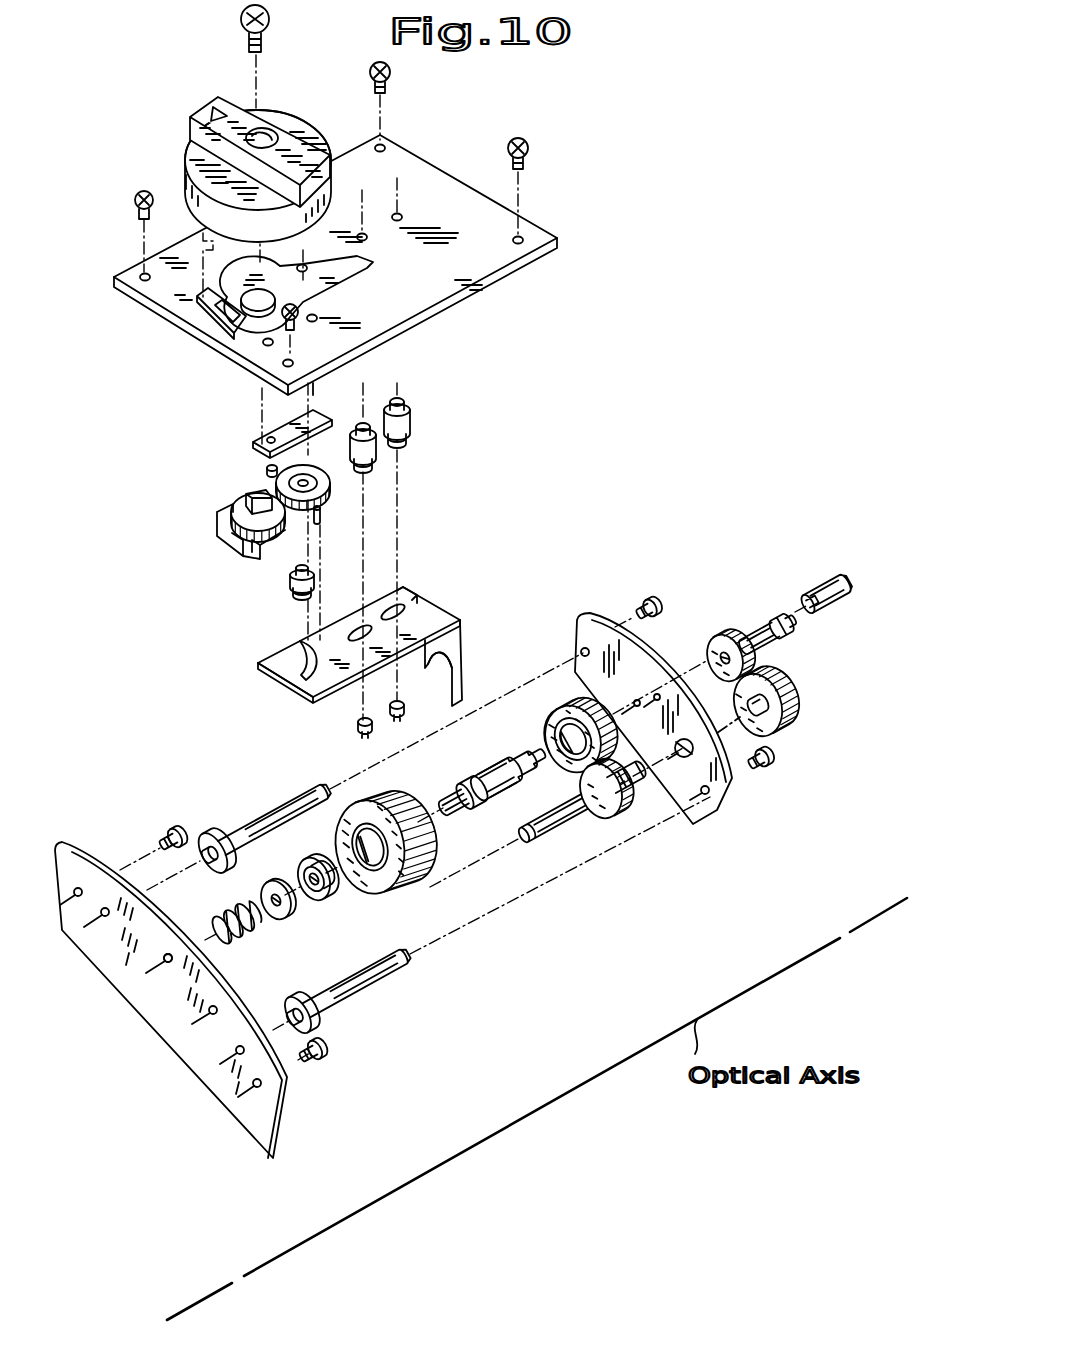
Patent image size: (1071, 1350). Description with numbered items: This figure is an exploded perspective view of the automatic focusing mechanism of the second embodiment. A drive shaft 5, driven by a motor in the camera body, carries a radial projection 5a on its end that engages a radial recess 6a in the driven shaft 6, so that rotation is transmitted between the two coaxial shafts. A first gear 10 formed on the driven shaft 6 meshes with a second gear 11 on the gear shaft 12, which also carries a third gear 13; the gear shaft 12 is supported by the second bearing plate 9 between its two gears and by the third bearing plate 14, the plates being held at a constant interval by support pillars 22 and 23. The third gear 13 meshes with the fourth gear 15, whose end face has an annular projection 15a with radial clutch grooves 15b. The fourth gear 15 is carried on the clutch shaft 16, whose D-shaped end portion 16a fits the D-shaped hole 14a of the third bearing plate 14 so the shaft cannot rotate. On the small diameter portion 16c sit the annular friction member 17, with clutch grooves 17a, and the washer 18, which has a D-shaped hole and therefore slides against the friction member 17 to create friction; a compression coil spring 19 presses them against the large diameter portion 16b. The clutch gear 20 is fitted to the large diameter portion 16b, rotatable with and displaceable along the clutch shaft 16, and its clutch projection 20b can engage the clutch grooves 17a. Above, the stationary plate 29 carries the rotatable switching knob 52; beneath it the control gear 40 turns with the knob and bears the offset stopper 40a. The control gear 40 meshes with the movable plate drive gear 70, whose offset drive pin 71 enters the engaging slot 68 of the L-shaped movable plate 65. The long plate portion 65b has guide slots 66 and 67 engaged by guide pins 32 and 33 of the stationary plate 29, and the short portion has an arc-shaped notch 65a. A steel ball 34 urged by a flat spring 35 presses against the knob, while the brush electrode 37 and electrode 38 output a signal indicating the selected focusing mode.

The drive shaft 5 is at (838, 583).
The projection 5a is at (815, 598).
The driven shaft 6 is at (756, 632).
The recess 6a is at (790, 630).
The second bearing plate 9 is at (718, 807).
The first gear 10 is at (733, 650).
The second gear 11 is at (795, 707).
The gear shaft 12 is at (584, 812).
The third gear 13 is at (625, 812).
The third bearing plate 14 is at (285, 1130).
The hole 14a is at (165, 962).
The fourth gear 15 is at (558, 718).
The annular projection 15a is at (576, 760).
The clutch grooves 15b is at (575, 708).
The clutch shaft 16 is at (505, 765).
The end portion 16a is at (457, 807).
The large diameter portion 16b is at (502, 803).
The small diameter portion 16c is at (476, 785).
The friction member 17 is at (325, 862).
The clutch grooves 17a is at (333, 886).
The washer 18 is at (282, 912).
The compression coil spring 19 is at (250, 932).
The clutch gear 20 is at (405, 875).
The clutch projection 20b is at (378, 862).
The support pillar 22 is at (268, 820).
The support pillar 23 is at (380, 985).
The stationary plate 29 is at (485, 263).
The guide pin 32 is at (380, 452).
The guide pin 33 is at (410, 418).
The steel ball 34 is at (313, 393).
The flat spring 35 is at (290, 425).
The brush electrode 37 is at (205, 300).
The electrode 38 is at (362, 262).
The control gear 40 is at (240, 490).
The stopper 40a is at (240, 548).
The switching knob 52 is at (190, 157).
The movable plate 65 is at (455, 625).
The arc-shaped notch 65a is at (440, 655).
The long plate portion 65b is at (305, 640).
The guide slot 66 is at (360, 625).
The guide slot 67 is at (415, 600).
The engaging slot 68 is at (275, 672).
The movable plate drive gear 70 is at (330, 485).
The drive pin 71 is at (325, 520).